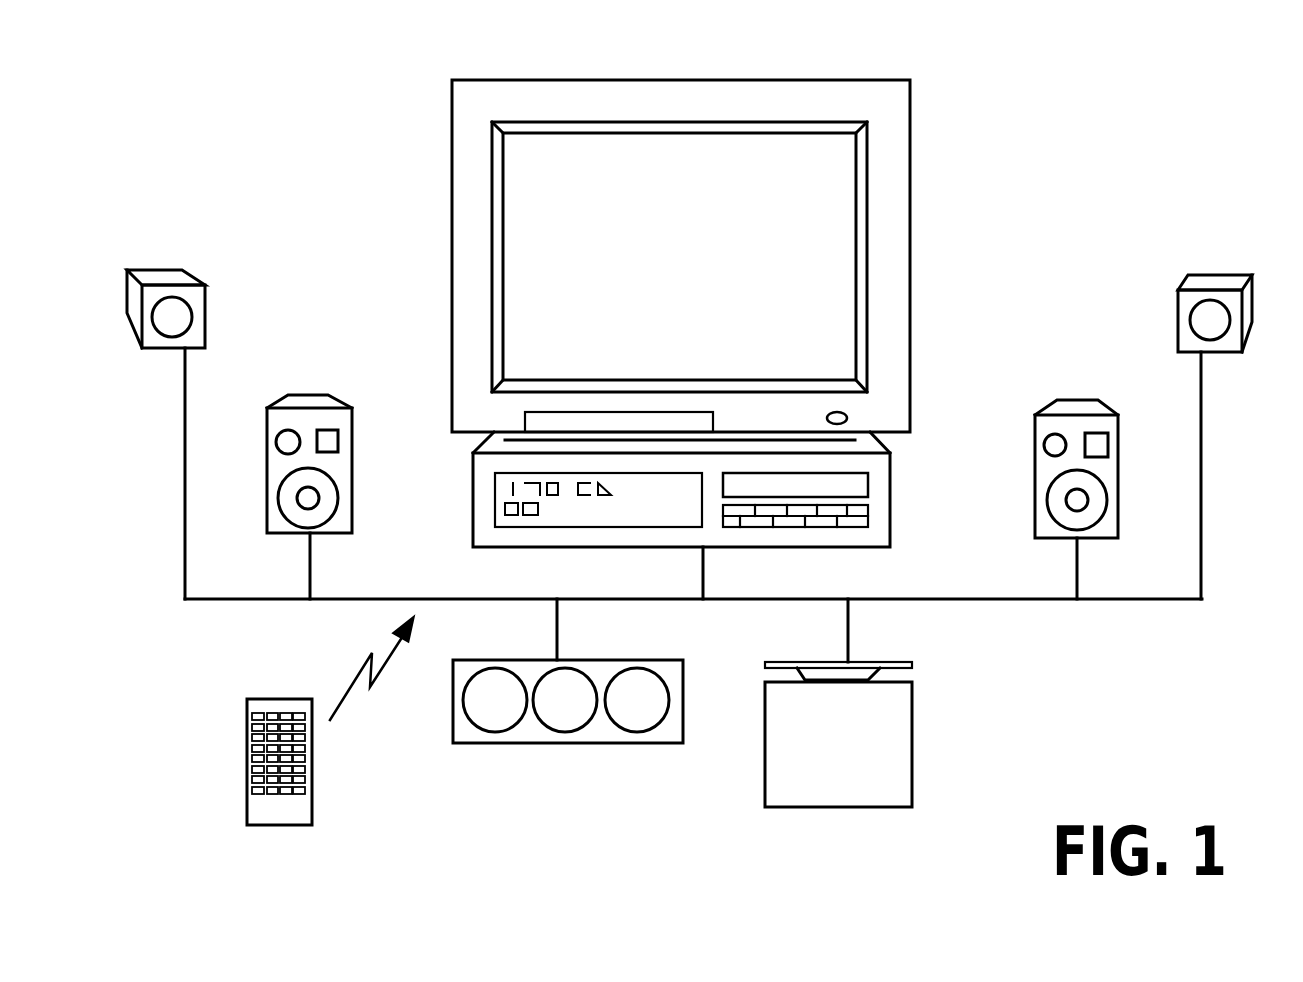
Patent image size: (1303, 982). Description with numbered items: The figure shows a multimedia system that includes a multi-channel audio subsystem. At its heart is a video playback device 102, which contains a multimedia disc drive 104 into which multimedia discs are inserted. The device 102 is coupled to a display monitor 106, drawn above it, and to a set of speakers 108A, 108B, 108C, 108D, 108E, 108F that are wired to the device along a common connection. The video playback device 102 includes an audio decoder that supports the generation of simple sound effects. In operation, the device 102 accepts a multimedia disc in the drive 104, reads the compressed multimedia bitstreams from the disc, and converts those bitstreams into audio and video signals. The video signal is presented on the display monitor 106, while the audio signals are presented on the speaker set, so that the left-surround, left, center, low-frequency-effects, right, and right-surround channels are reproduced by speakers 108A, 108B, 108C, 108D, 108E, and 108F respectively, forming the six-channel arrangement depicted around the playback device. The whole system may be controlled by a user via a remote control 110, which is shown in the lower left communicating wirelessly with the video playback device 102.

The video playback device 102 is at (473, 506).
The multimedia disc drive 104 is at (868, 486).
The display monitor 106 is at (451, 350).
The speaker 108A is at (163, 434).
The speaker 108B is at (280, 477).
The speaker 108C is at (568, 692).
The speaker 108D is at (838, 726).
The speaker 108E is at (1103, 479).
The speaker 108F is at (1212, 437).
The remote control 110 is at (310, 721).